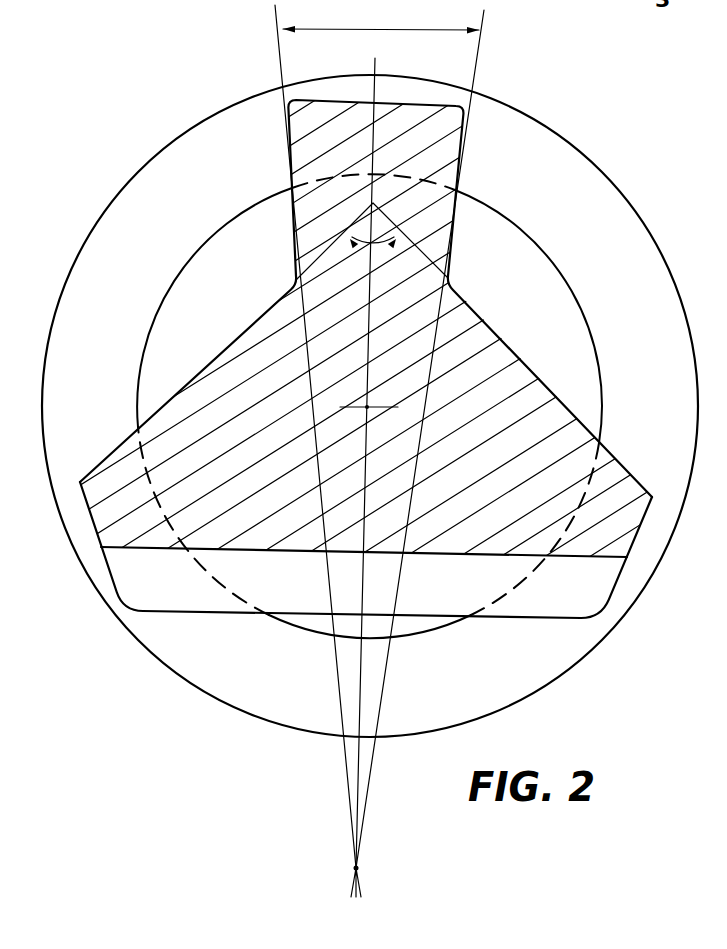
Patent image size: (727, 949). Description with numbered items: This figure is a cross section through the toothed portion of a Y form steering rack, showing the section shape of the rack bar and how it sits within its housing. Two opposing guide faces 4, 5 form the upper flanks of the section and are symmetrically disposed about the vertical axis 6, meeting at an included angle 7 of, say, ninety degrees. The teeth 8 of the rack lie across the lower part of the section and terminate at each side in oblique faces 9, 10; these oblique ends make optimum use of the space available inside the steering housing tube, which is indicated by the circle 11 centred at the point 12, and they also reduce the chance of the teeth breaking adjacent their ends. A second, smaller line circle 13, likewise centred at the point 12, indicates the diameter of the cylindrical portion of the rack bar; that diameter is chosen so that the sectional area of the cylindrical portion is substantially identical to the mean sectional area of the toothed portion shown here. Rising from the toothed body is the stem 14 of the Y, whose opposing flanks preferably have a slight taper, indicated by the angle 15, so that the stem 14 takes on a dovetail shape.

The guide face 4 is at (253, 322).
The guide face 5 is at (508, 340).
The vertical axis 6 is at (382, 79).
The included angle 7 is at (352, 236).
The teeth 8 is at (565, 598).
The oblique face 9 is at (114, 583).
The oblique face 10 is at (622, 594).
The circle (steering housing tube) 11 is at (577, 145).
The centre 12 is at (367, 407).
The line circle (diameter of cylindrical portion) 13 is at (268, 195).
The stem of the Y 14 is at (424, 137).
The angle 15 is at (379, 436).